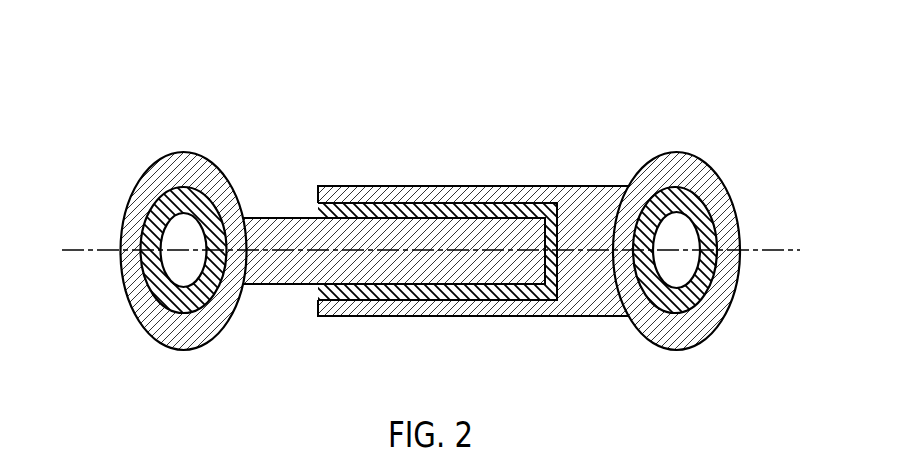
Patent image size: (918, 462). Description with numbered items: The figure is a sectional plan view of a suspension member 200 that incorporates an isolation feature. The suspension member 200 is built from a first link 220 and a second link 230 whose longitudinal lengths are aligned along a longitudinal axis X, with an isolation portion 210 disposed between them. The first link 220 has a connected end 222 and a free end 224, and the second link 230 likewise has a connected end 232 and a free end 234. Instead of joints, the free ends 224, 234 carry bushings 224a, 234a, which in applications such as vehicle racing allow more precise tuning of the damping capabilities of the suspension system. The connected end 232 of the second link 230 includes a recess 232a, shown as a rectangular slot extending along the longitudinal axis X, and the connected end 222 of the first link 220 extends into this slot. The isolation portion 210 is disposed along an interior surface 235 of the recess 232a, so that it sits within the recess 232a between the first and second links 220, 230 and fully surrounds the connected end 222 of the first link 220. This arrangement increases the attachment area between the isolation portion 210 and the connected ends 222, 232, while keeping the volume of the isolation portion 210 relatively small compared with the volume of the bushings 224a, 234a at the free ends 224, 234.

The suspension member 200 is at (431, 184).
The isolation portion 210 is at (318, 292).
The first link 220 is at (213, 238).
The connected end of the first link 222 is at (440, 285).
The free end of the first link 224 is at (152, 167).
The bushing 224a is at (143, 275).
The second link 230 is at (549, 217).
The connected end of the second link 232 is at (440, 186).
The recess 232a is at (561, 221).
The free end of the second link 234 is at (703, 167).
The bushing 234a is at (715, 275).
The interior surface of the recess 235 is at (394, 208).